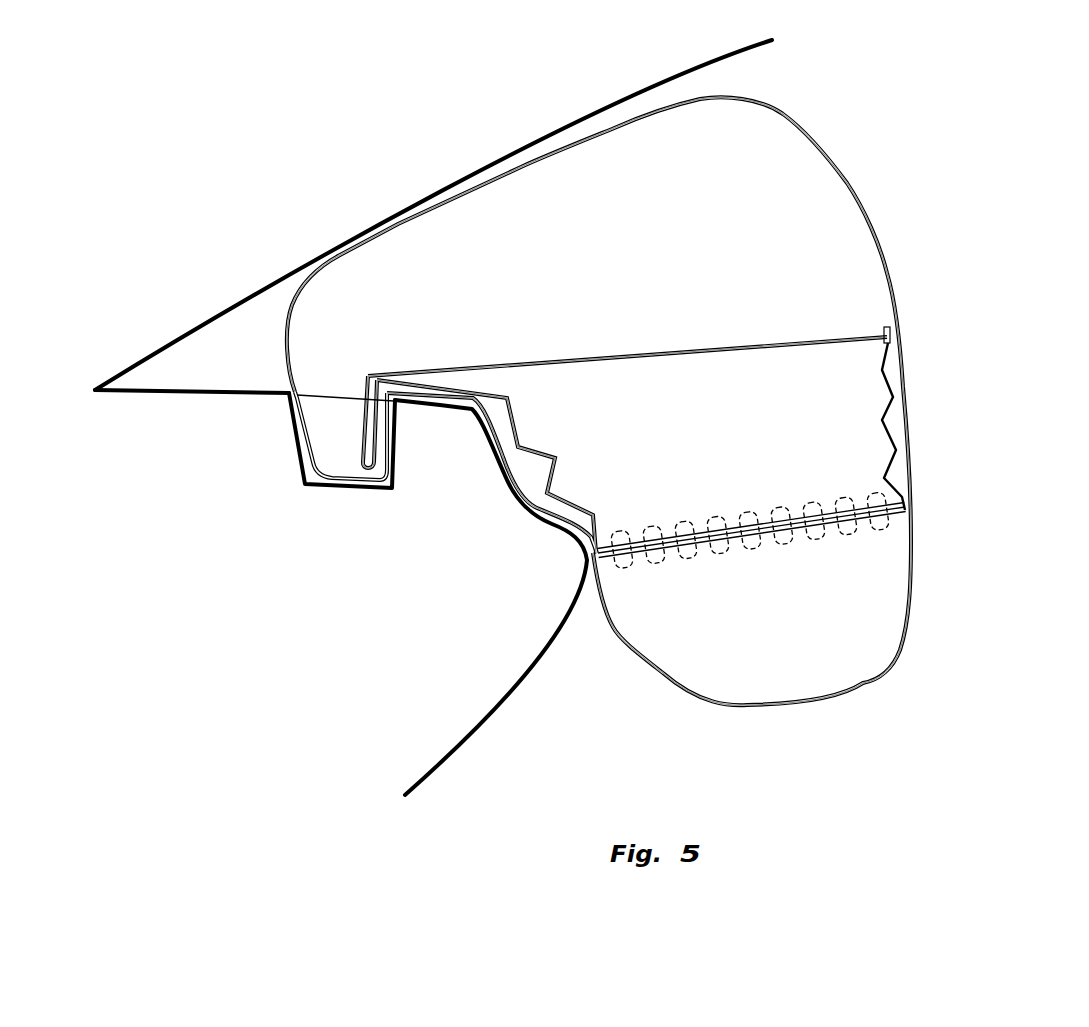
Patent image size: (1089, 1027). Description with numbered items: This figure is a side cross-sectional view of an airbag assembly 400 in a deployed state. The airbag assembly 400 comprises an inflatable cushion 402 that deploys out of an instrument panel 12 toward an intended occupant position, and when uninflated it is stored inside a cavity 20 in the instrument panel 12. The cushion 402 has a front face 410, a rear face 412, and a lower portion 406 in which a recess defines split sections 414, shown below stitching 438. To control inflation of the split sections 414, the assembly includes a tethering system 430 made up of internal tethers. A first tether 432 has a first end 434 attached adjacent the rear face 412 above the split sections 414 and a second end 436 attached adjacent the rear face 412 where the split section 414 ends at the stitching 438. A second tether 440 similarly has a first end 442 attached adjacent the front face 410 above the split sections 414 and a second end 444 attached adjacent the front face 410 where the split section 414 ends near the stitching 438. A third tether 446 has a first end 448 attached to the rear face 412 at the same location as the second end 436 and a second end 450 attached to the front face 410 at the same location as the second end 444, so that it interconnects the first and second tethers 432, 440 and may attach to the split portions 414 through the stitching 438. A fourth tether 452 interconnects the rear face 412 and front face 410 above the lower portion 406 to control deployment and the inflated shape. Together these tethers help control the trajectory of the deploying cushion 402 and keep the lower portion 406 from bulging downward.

The instrument panel 12 is at (433, 417).
The cavity 20 is at (300, 467).
The airbag assembly 400 is at (645, 405).
The inflatable cushion 402 is at (847, 183).
The lower portion 406 is at (833, 620).
The front face 410 is at (883, 268).
The rear face 412 is at (525, 510).
The split sections 414 is at (887, 560).
The tethering system 430 is at (850, 457).
The first tether 432 is at (512, 437).
The first end of first tether 434 is at (368, 462).
The second end of first tether 436 is at (570, 530).
The stitching 438 is at (740, 550).
The second tether 440 is at (892, 413).
The first end of second tether 442 is at (903, 352).
The second end of second tether 444 is at (905, 480).
The third tether 446 is at (692, 547).
The first end of third tether 448 is at (620, 647).
The second end of third tether 450 is at (913, 527).
The fourth tether 452 is at (648, 353).